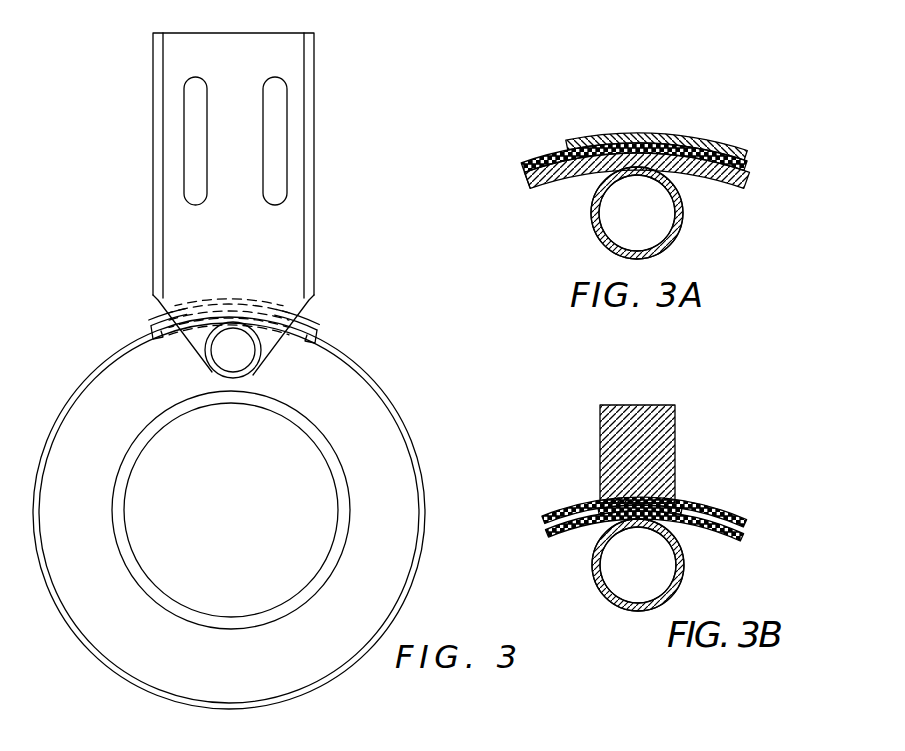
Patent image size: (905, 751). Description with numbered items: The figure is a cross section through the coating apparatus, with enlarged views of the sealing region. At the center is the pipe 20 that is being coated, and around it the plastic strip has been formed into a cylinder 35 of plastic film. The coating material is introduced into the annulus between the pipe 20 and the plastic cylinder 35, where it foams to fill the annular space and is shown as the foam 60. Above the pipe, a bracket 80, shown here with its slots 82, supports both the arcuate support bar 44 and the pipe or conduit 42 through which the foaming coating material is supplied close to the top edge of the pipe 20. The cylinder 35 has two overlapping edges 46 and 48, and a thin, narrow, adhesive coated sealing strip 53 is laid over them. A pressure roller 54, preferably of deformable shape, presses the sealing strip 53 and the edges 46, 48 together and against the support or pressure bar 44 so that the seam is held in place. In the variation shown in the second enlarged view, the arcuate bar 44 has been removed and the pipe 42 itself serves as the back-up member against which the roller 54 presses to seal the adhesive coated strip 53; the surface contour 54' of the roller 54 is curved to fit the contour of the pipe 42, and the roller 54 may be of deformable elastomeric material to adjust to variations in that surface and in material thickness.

In FIG. 3, the pipe 20 is at (347, 530).
In FIG. 3, the cylinder of plastic film 35 is at (422, 552).
In FIG. 3, the coating supply pipe 42 is at (255, 370).
In FIG. 3A, the coating supply pipe 42 is at (683, 220).
In FIG. 3B, the coating supply pipe 42 is at (686, 572).
In FIG. 3, the arcuate support bar 44 is at (158, 342).
In FIG. 3A, the arcuate support bar 44 is at (570, 178).
In FIG. 3, the overlapping edge 46 is at (150, 325).
In FIG. 3A, the overlapping edge 46 is at (735, 165).
In FIG. 3B, the overlapping edge 46 is at (705, 525).
In FIG. 3, the overlapping edge 48 is at (183, 328).
In FIG. 3A, the overlapping edge 48 is at (548, 150).
In FIG. 3B, the overlapping edge 48 is at (557, 520).
In FIG. 3A, the sealing strip 53 is at (617, 130).
In FIG. 3B, the sealing strip 53 is at (648, 500).
In FIG. 3B, the pressure roller 54 is at (671, 454).
In FIG. 3B, the surface contour of roller 54' is at (615, 473).
In FIG. 3, the foam 60 is at (392, 492).
In FIG. 3, the bracket 80 is at (153, 160).
In FIG. 3, the slot 82 is at (267, 134).